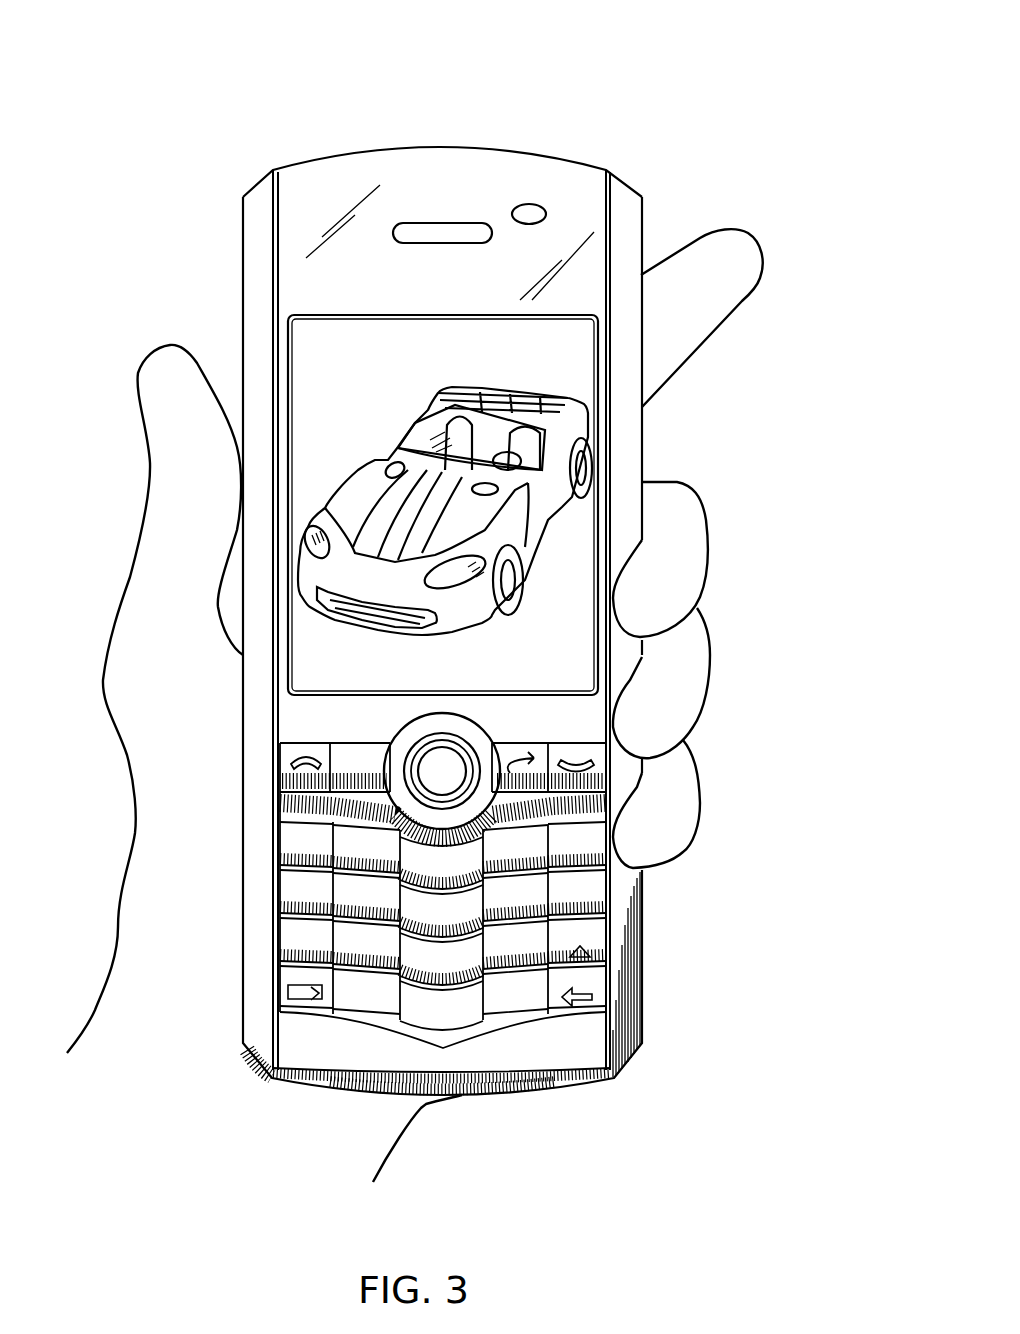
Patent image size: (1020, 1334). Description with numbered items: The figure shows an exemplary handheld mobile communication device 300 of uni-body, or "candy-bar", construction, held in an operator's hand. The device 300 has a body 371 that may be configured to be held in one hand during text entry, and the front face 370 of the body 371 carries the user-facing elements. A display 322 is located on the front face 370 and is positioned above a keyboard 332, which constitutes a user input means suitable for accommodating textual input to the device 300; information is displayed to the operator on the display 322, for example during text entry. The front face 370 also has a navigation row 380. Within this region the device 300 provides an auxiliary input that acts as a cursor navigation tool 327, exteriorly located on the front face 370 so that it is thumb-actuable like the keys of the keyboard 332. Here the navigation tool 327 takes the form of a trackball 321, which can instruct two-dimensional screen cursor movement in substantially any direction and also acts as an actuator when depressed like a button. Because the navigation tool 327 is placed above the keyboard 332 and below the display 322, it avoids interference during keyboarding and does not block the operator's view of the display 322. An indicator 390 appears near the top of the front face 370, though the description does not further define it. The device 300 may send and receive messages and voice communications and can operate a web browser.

The mobile communication device 300 is at (660, 84).
The LED indicator 390 is at (528, 204).
The body 371 is at (243, 198).
The front face 370 is at (621, 197).
The display 322 is at (305, 337).
The navigation row 380 is at (268, 782).
The trackball 321 is at (440, 779).
The cursor navigation tool 327 is at (480, 794).
The keyboard 332 is at (460, 1052).